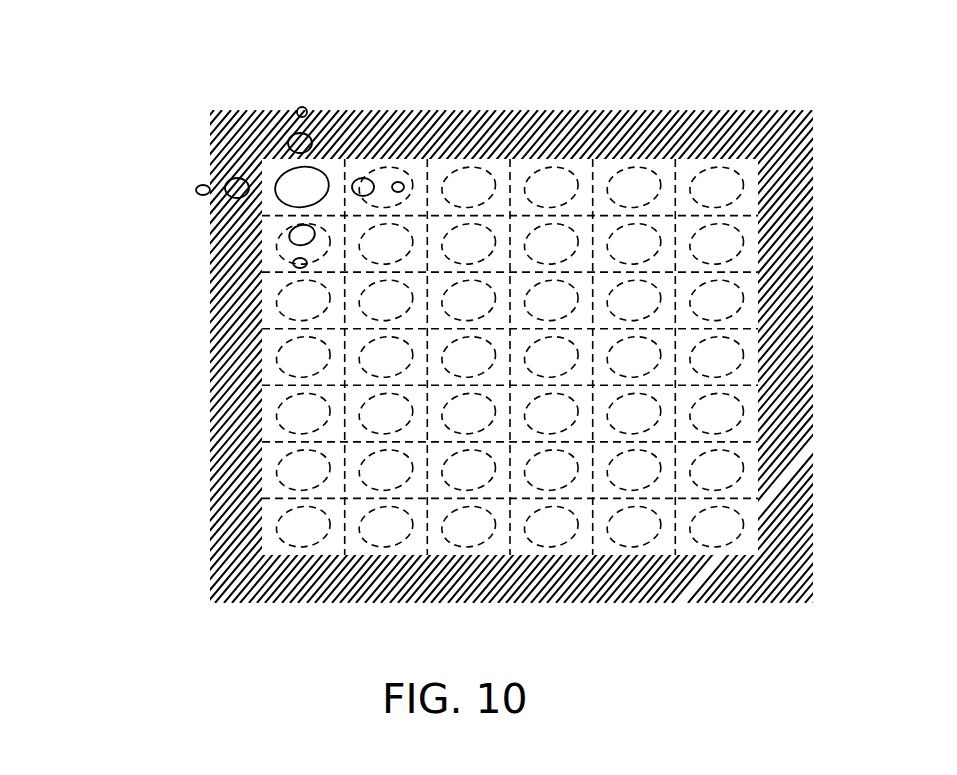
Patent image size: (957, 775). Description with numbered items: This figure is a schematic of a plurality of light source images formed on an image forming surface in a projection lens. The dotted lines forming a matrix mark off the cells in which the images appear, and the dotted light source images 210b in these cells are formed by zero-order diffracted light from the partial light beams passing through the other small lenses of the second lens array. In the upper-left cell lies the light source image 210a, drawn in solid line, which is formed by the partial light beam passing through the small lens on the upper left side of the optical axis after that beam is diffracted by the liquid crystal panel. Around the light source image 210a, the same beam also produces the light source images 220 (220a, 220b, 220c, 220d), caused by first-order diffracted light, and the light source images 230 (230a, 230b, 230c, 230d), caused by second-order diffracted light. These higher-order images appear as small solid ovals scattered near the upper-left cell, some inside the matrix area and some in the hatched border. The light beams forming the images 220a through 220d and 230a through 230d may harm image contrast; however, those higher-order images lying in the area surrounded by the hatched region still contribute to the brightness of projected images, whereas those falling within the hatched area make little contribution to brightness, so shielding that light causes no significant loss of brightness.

The light source image 210a is at (320, 173).
The dotted light source images 210b is at (720, 157).
The light source images 220 is at (343, 130).
The light source image 220a is at (305, 133).
The light source image 220b is at (373, 181).
The light source image 220c is at (290, 233).
The light source image 220d is at (235, 178).
The light source images 230 is at (359, 155).
The light source image 230a is at (302, 107).
The light source image 230b is at (404, 184).
The light source image 230c is at (294, 268).
The light source image 230d is at (197, 188).